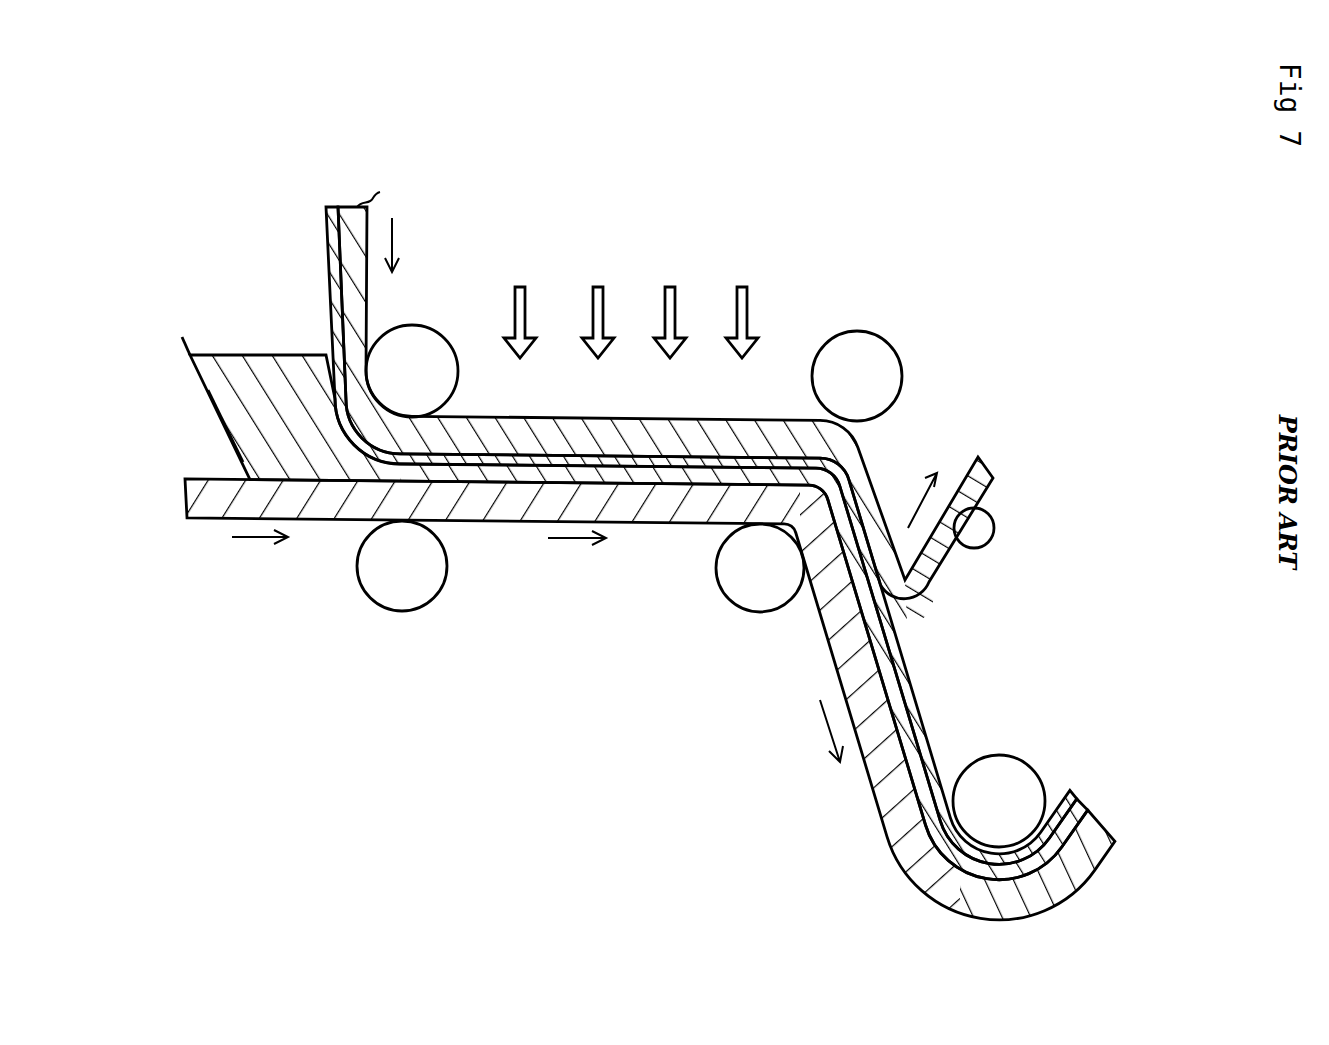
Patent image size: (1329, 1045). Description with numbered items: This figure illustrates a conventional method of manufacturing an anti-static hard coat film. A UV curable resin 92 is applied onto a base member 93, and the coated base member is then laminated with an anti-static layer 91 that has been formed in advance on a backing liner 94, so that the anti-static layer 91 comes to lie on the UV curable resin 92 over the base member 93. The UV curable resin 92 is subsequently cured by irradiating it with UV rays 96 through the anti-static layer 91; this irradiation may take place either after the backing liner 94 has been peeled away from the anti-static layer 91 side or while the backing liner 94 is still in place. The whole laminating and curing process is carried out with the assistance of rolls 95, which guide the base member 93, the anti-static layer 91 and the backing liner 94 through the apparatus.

The anti-static layer 91 is at (326, 250).
The UV curable resin 92 is at (250, 368).
The base member 93 is at (205, 512).
The backing liner 94 is at (980, 475).
The rolls 95 is at (415, 335).
The UV rays 96 is at (598, 303).